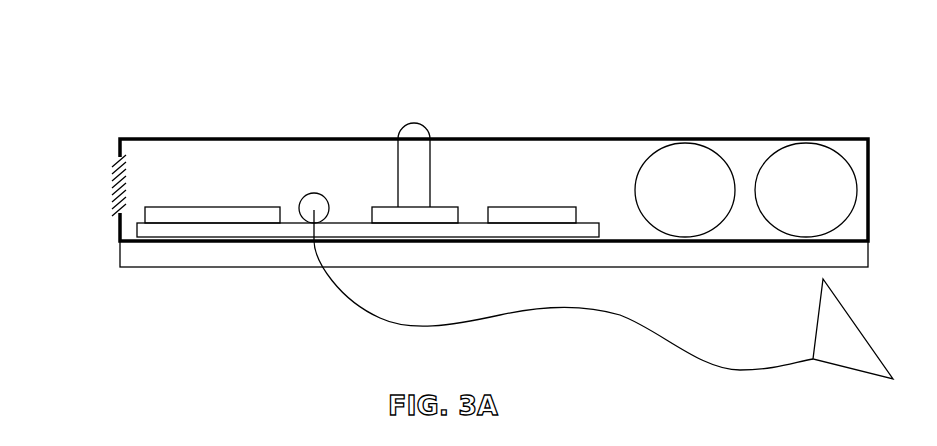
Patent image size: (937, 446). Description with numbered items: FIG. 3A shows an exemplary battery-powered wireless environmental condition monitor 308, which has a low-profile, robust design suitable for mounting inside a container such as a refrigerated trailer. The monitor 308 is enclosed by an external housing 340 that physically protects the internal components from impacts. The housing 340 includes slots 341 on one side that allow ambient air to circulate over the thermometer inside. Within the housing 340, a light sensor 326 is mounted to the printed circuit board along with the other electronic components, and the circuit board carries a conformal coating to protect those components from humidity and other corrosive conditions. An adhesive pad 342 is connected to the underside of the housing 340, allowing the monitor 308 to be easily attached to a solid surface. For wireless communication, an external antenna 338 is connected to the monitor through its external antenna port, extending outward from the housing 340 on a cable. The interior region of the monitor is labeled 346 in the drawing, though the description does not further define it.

The environmental condition monitor 308 is at (86, 99).
The light sensor 326 is at (418, 130).
The external antenna 338 is at (820, 311).
The external housing 340 is at (600, 138).
The slots 341 is at (110, 188).
The adhesive pad 342 is at (226, 253).
The circuit board 346 is at (368, 198).